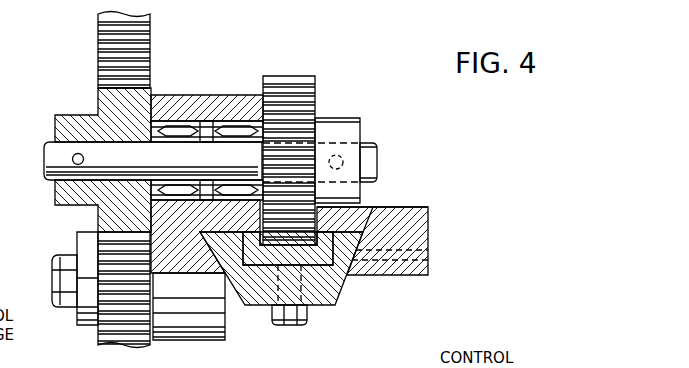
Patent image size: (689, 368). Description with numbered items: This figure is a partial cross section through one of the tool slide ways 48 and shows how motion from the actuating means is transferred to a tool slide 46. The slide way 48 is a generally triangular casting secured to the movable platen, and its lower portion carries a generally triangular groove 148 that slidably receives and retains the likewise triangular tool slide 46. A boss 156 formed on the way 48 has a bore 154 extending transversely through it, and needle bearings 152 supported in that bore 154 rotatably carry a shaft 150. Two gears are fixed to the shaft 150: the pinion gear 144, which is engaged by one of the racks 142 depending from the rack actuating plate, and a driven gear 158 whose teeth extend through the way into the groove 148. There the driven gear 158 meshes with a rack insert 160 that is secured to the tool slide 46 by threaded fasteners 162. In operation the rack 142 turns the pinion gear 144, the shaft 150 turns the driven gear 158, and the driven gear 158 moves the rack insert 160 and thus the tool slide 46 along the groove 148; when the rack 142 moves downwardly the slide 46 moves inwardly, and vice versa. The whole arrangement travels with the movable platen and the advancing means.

The rack 142 is at (150, 40).
The pinion gear 144 is at (100, 100).
The triangular groove 148 is at (368, 212).
The shaft 150 is at (377, 158).
The needle bearing 152 is at (183, 128).
The bore 154 is at (152, 112).
The boss 156 is at (245, 95).
The driven gear 158 is at (315, 95).
The rack insert 160 is at (263, 267).
The threaded fastener 162 is at (295, 327).
The tool slide 46 is at (343, 293).
The tool slide way 48 is at (430, 232).